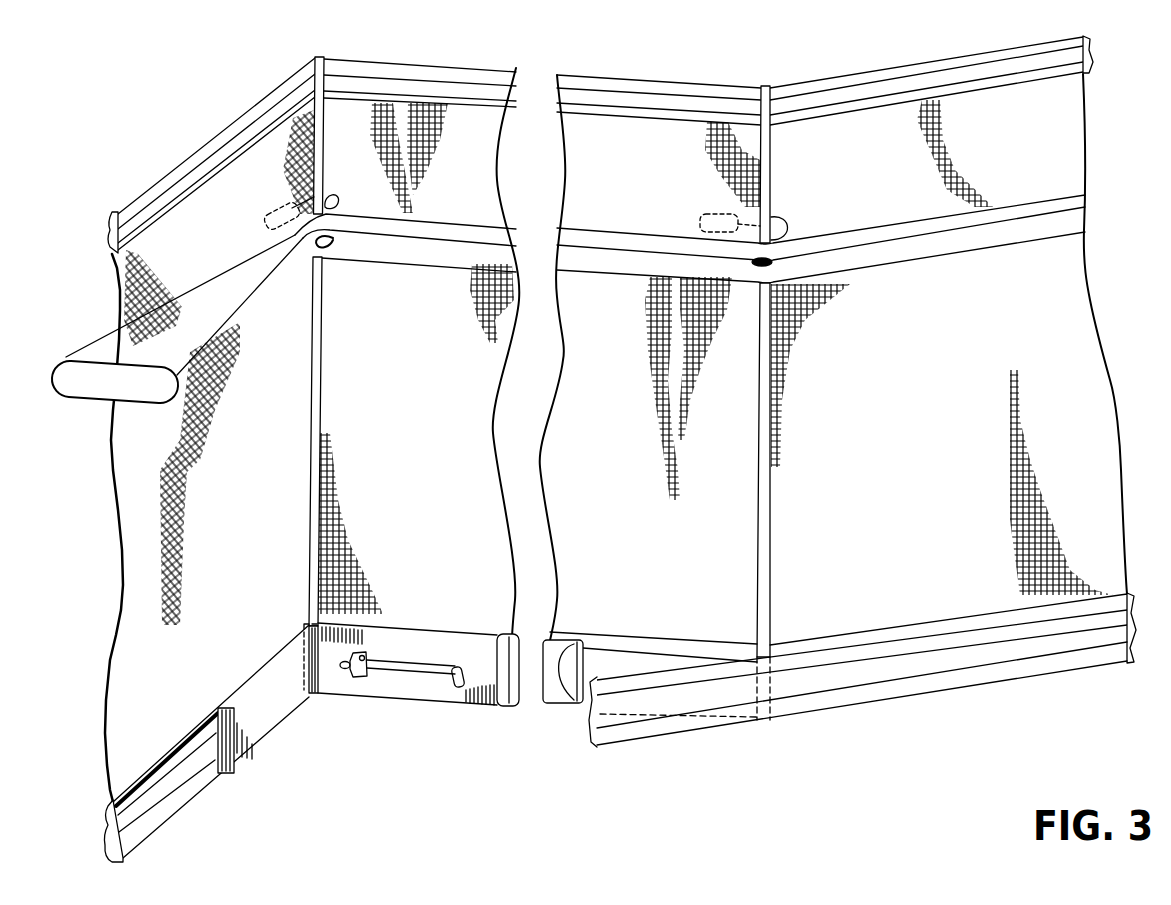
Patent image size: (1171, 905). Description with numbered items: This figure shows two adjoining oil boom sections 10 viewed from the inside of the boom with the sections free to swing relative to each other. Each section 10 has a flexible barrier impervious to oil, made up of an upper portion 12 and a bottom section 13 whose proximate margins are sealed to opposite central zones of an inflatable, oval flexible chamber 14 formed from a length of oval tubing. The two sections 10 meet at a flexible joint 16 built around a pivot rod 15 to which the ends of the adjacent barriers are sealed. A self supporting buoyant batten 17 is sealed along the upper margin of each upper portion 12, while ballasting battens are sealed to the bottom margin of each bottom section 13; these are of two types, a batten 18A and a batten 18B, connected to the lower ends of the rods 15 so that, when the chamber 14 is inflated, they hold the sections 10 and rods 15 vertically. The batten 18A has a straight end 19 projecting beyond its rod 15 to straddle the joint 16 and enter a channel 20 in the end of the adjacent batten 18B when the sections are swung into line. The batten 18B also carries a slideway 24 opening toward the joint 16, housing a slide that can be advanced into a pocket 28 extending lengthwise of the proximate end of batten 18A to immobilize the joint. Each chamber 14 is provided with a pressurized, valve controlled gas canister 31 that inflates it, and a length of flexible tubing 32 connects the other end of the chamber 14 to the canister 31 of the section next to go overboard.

The section 10 is at (548, 70).
The upper portion 12 is at (470, 158).
The bottom section 13 is at (480, 386).
The inflatable, oval flexible chamber 14 is at (943, 237).
The pivot rod 15 is at (315, 58).
The flexible joint 16 is at (316, 696).
The self supporting buoyant batten 17 is at (182, 163).
The batten 18A is at (160, 823).
The batten 18B is at (553, 697).
The straight end 19 is at (653, 728).
The channel 20 is at (631, 674).
The slideway 24 is at (400, 687).
The pocket 28 is at (291, 752).
The gas canister 31 is at (700, 221).
The flexible tubing 32 is at (788, 229).